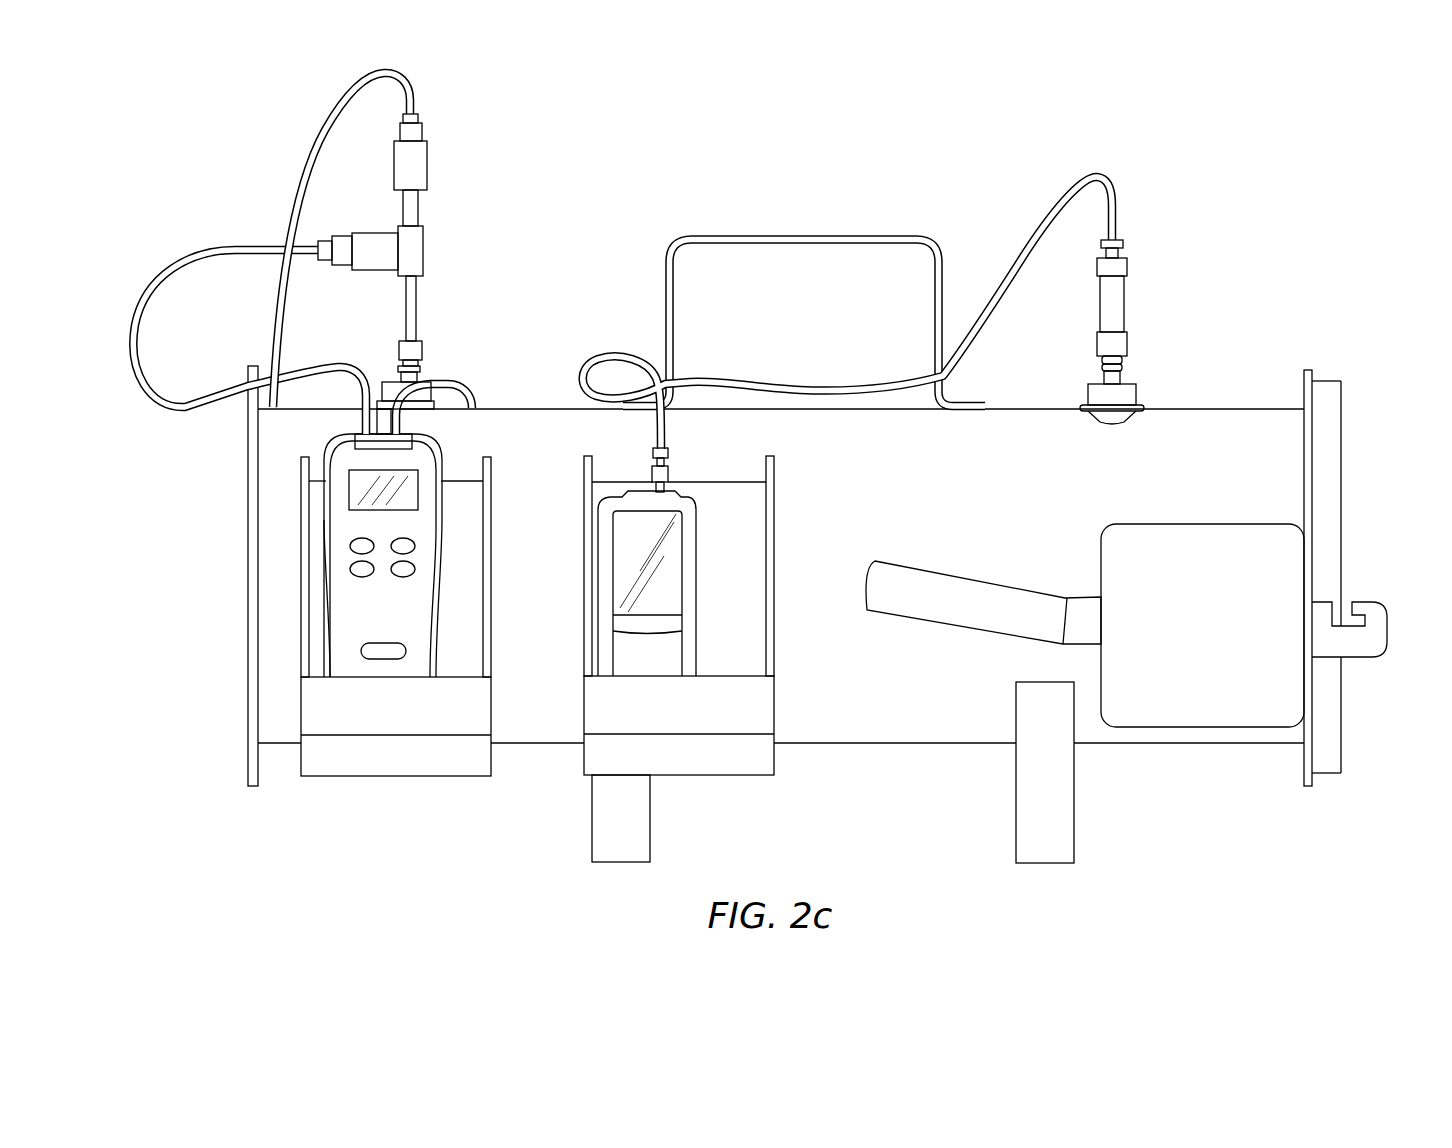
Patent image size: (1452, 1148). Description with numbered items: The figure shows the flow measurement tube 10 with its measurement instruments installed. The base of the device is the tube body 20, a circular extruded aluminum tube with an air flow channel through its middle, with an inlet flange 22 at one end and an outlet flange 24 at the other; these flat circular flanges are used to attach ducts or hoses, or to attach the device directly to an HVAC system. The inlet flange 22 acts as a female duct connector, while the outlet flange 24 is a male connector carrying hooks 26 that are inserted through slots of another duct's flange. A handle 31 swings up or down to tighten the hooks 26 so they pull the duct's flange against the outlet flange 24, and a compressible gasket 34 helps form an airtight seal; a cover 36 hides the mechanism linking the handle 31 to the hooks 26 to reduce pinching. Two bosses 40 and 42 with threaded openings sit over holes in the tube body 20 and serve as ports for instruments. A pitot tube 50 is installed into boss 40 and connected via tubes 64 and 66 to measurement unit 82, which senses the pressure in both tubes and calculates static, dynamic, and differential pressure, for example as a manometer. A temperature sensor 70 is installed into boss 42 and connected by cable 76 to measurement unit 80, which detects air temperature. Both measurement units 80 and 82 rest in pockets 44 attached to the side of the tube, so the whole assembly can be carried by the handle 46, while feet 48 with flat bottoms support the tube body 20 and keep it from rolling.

The flow measurement tube 10 is at (1252, 179).
The tube body 20 is at (875, 725).
The inlet flange 22 is at (248, 553).
The outlet flange 24 is at (1304, 384).
The hooks 26 is at (1388, 632).
The handle 31 is at (930, 578).
The gasket 34 is at (1341, 414).
The cover 36 is at (1163, 524).
The boss 40 is at (392, 385).
The boss 42 is at (1133, 393).
The pockets 44 is at (400, 770).
The handle 46 is at (820, 235).
The feet 48 is at (603, 830).
The pitot tube 50 is at (425, 250).
The tube 64 is at (310, 150).
The tube 66 is at (171, 257).
The temperature sensor 70 is at (1118, 300).
The cable 76 is at (1047, 214).
The measurement unit 80 is at (696, 554).
The measurement unit 82 is at (430, 462).